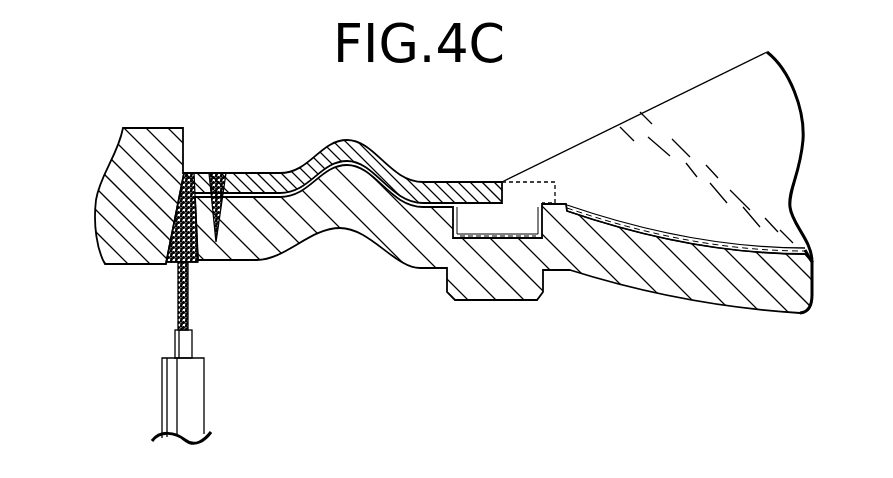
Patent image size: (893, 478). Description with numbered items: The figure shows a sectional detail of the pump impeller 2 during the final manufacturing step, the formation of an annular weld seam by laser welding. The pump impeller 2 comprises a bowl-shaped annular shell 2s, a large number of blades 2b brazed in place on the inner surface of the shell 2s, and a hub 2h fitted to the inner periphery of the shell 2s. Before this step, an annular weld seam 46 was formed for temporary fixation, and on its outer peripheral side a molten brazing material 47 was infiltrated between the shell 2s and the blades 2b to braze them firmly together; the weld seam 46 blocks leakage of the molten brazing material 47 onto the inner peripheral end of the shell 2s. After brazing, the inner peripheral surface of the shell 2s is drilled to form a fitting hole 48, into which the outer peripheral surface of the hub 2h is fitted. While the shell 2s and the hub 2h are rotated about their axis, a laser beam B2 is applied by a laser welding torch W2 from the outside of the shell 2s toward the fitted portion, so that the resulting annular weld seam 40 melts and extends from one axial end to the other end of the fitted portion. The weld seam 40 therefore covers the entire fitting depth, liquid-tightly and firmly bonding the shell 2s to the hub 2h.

The pump impeller 2 is at (529, 144).
The blades 2b is at (687, 108).
The hub 2h is at (128, 187).
The shell 2s is at (683, 282).
The annular weld seam 40 is at (170, 268).
The annular weld seam 46 is at (215, 178).
The molten brazing material 47 is at (290, 193).
The fitting hole 48 is at (180, 186).
The laser beam B2 is at (190, 300).
The laser welding torch W2 is at (192, 400).